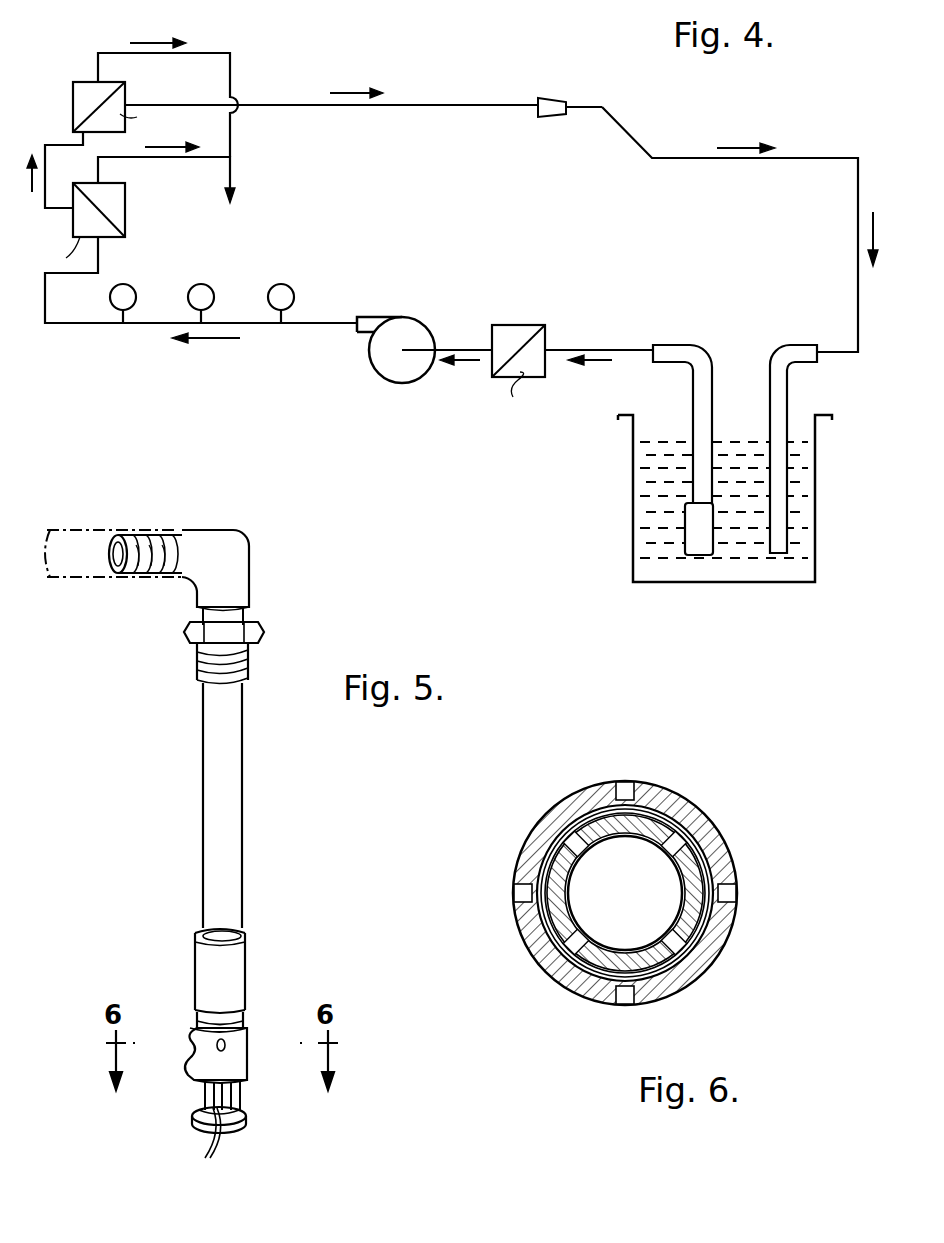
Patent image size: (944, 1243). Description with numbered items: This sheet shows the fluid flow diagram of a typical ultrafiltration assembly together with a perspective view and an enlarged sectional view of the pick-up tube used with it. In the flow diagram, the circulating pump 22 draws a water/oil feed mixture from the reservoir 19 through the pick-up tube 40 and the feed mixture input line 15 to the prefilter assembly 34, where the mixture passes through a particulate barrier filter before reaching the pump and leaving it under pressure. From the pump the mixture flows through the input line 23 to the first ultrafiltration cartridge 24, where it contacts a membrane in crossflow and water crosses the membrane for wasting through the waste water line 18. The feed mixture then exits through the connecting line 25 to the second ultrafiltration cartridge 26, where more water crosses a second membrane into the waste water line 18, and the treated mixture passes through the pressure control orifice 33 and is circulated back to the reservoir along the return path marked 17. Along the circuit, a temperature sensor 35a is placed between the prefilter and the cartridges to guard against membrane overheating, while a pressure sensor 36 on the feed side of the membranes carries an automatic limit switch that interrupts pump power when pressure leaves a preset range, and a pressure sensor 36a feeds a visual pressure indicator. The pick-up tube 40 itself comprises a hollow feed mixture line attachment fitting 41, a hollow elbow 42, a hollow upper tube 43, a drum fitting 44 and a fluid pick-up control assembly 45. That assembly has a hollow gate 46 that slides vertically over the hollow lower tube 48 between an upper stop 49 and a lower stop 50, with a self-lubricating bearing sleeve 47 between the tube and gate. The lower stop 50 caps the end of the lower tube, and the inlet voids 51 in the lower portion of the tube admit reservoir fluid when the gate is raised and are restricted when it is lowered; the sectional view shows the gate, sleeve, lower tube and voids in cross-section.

In FIG. 4, the feed mixture input line 15 is at (615, 350).
In FIG. 5, the feed mixture input line 15 is at (86, 530).
In FIG. 4, the supply conduit 17 is at (652, 160).
In FIG. 4, the waste water line 18 is at (232, 168).
In FIG. 4, the reservoir 19 is at (633, 506).
In FIG. 4, the circulating pump 22 is at (405, 317).
In FIG. 4, the input line 23 is at (66, 325).
In FIG. 4, the first ultrafiltration cartridge 24 is at (125, 205).
In FIG. 4, the connecting line 25 is at (47, 156).
In FIG. 4, the second ultrafiltration cartridge 26 is at (73, 100).
In FIG. 4, the pressure control orifice 33 is at (558, 98).
In FIG. 4, the prefilter assembly 34 is at (522, 325).
In FIG. 4, the temperature sensor 35a is at (201, 284).
In FIG. 4, the pressure sensor 36 is at (134, 284).
In FIG. 4, the pressure sensor 36a is at (290, 284).
In FIG. 4, the pick-up tube 40 is at (708, 358).
In FIG. 5, the pick-up tube 40 is at (300, 784).
In FIG. 6, the pick-up tube 40 is at (632, 870).
In FIG. 5, the feed mixture line attachment fitting 41 is at (152, 535).
In FIG. 5, the hollow elbow 42 is at (240, 530).
In FIG. 5, the hollow upper tube 43 is at (203, 711).
In FIG. 5, the drum fitting 44 is at (262, 618).
In FIG. 5, the fluid pick-up control assembly 45 is at (172, 975).
In FIG. 6, the fluid pick-up control assembly 45 is at (740, 815).
In FIG. 5, the hollow gate 46 is at (243, 1024).
In FIG. 6, the hollow gate 46 is at (742, 858).
In FIG. 5, the bearing sleeve 47 is at (190, 1040).
In FIG. 6, the bearing sleeve 47 is at (540, 912).
In FIG. 5, the hollow lower tube 48 is at (240, 1098).
In FIG. 6, the hollow lower tube 48 is at (586, 1000).
In FIG. 5, the upper stop 49 is at (245, 963).
In FIG. 5, the lower stop 50 is at (246, 1122).
In FIG. 5, the inlet voids 51 is at (208, 1147).
In FIG. 6, the inlet voids 51 is at (562, 822).